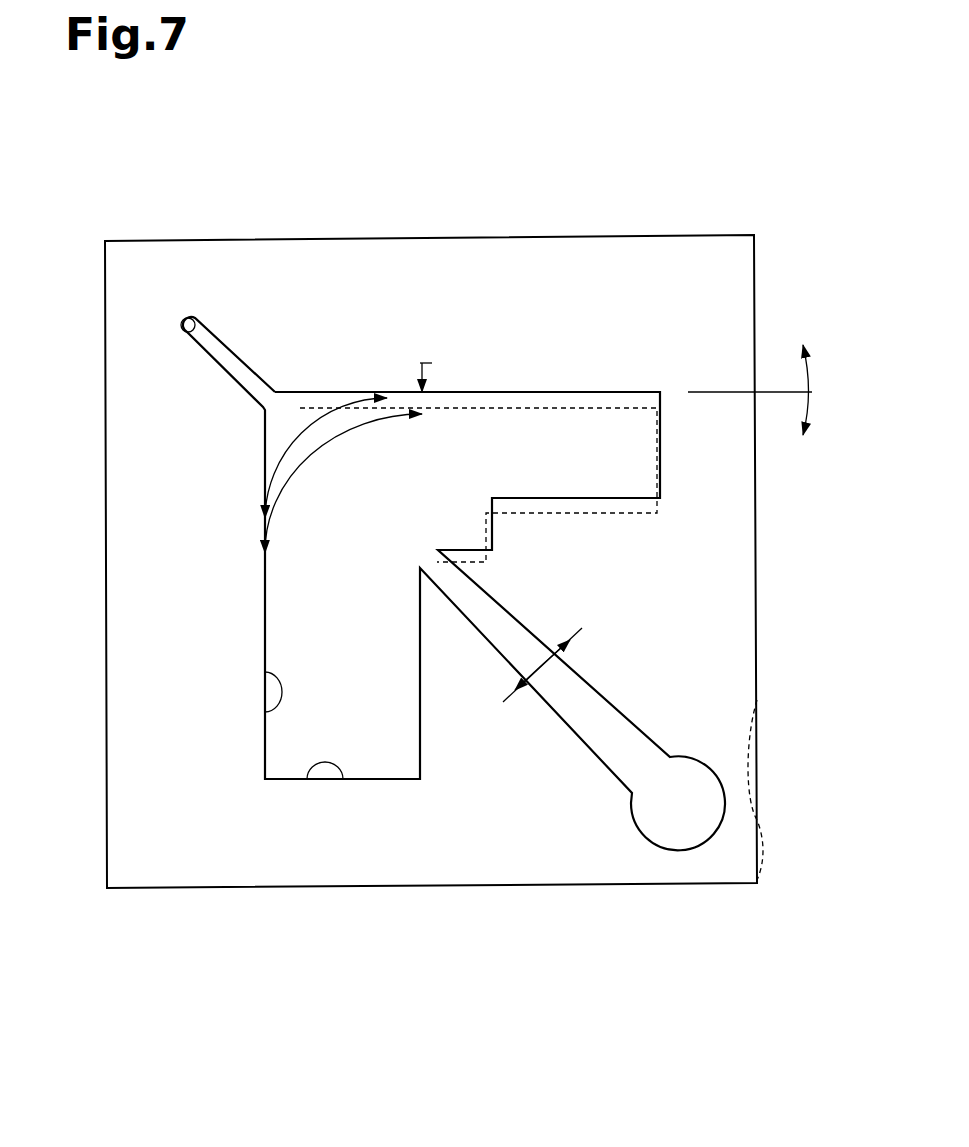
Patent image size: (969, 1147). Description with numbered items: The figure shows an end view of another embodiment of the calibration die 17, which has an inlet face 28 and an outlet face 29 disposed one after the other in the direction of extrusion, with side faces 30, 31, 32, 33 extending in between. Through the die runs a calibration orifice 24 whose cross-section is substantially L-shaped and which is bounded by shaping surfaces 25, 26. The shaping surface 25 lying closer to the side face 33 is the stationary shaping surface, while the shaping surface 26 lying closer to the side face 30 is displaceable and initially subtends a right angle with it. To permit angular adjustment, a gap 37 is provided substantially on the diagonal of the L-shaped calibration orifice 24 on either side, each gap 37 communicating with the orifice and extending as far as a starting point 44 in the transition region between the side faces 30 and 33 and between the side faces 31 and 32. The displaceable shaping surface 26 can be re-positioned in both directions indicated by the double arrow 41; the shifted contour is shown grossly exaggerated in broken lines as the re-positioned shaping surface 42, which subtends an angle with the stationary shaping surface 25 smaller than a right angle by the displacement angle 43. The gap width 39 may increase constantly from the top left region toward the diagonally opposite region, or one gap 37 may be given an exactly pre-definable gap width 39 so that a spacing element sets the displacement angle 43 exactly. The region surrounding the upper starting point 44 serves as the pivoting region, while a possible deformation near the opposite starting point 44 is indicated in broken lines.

The calibration die 17 is at (658, 283).
The calibration orifice 24 is at (448, 430).
The shaping surface 25 is at (265, 710).
The shaping surface 26 is at (658, 443).
The inlet face 28 is at (540, 282).
The outlet face 29 is at (680, 671).
The side face 30 is at (388, 236).
The side face 31 is at (248, 890).
The side face 32 is at (756, 288).
The side face 33 is at (105, 600).
The gap 37 is at (237, 333).
The gap width 39 is at (574, 634).
The double arrow 41 is at (810, 390).
The re-positioned shaping surface 42 is at (533, 412).
The displacement angle 43 is at (422, 353).
The starting point 44 is at (189, 316).